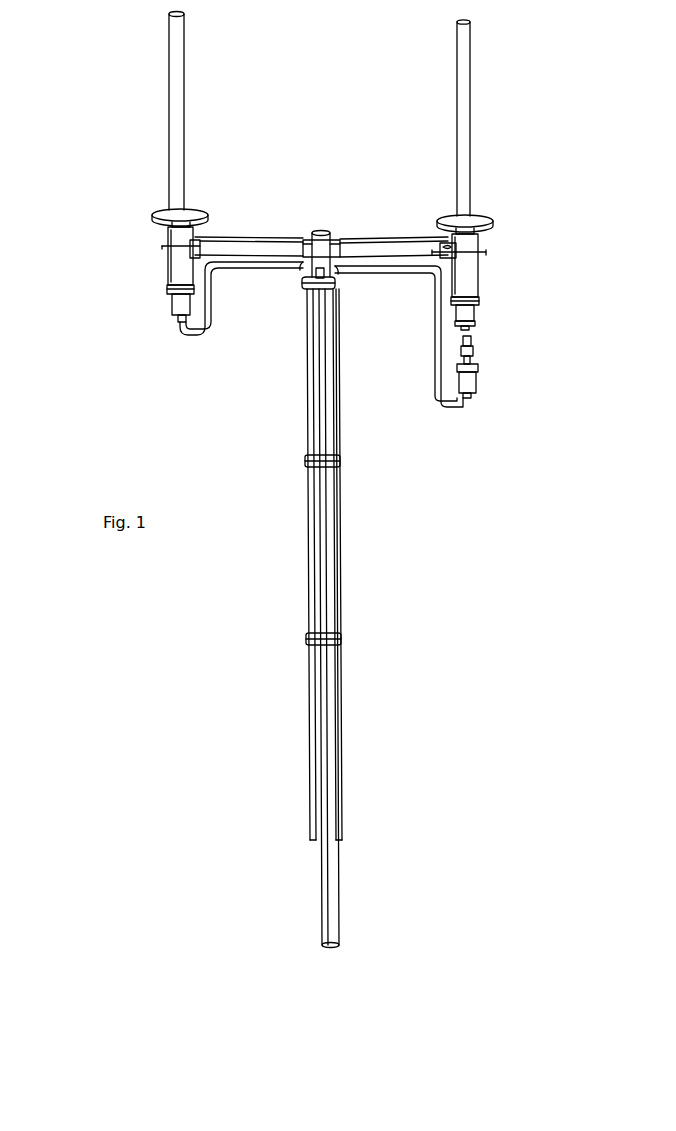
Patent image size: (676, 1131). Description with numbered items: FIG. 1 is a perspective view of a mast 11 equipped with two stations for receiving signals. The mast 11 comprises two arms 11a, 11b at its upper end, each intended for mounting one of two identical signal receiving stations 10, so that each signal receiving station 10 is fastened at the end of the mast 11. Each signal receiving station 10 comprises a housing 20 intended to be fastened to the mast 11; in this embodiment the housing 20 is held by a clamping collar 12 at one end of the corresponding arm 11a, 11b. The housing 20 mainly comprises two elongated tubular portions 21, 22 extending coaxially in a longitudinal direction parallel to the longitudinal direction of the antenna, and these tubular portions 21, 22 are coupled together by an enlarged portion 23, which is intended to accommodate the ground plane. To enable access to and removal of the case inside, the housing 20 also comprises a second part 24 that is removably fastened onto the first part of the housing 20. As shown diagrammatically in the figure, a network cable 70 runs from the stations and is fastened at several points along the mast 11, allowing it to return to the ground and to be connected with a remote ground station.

The signal receiving station 10 is at (86, 262).
The mast 11 is at (339, 893).
The arm 11a is at (388, 245).
The arm 11b is at (245, 245).
The clamping collar 12 is at (482, 253).
The housing 20 is at (127, 10).
The elongated tubular portion 21 is at (465, 110).
The elongated tubular portion 22 is at (478, 283).
The enlarged portion 23 is at (480, 218).
The second part 24 is at (477, 381).
The network cable 70 is at (437, 330).